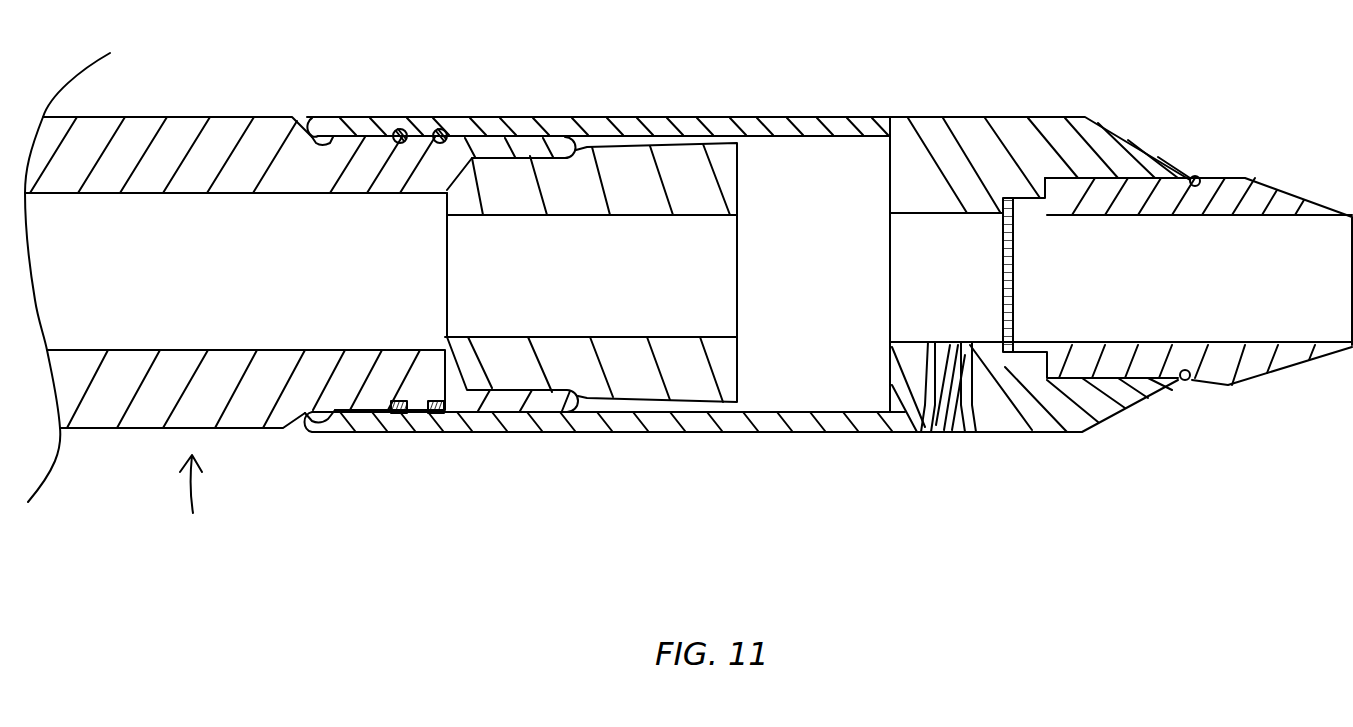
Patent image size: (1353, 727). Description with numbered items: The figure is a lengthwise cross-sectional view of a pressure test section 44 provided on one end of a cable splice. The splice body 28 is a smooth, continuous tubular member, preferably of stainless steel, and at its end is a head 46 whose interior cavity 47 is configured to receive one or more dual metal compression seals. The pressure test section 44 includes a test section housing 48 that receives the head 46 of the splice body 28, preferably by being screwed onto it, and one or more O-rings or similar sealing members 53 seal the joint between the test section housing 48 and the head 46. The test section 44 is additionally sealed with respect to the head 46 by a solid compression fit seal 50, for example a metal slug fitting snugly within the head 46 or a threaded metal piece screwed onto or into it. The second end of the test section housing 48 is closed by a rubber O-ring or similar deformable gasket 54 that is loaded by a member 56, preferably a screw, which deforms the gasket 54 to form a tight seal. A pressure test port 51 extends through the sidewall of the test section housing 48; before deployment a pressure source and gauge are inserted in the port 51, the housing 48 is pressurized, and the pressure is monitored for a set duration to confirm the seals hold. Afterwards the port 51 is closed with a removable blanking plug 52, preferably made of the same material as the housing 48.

The splice body 28 is at (92, 428).
The pressure test section 44 is at (727, 78).
The head 46 is at (190, 504).
The interior cavity 47 is at (323, 139).
The test section housing 48 is at (860, 127).
The compression fit seal 50 is at (638, 385).
The pressure test port 51 is at (926, 417).
The blanking plug 52 is at (943, 420).
The sealing members 53 is at (446, 128).
The gasket 54 is at (1007, 198).
The member 56 is at (1268, 183).